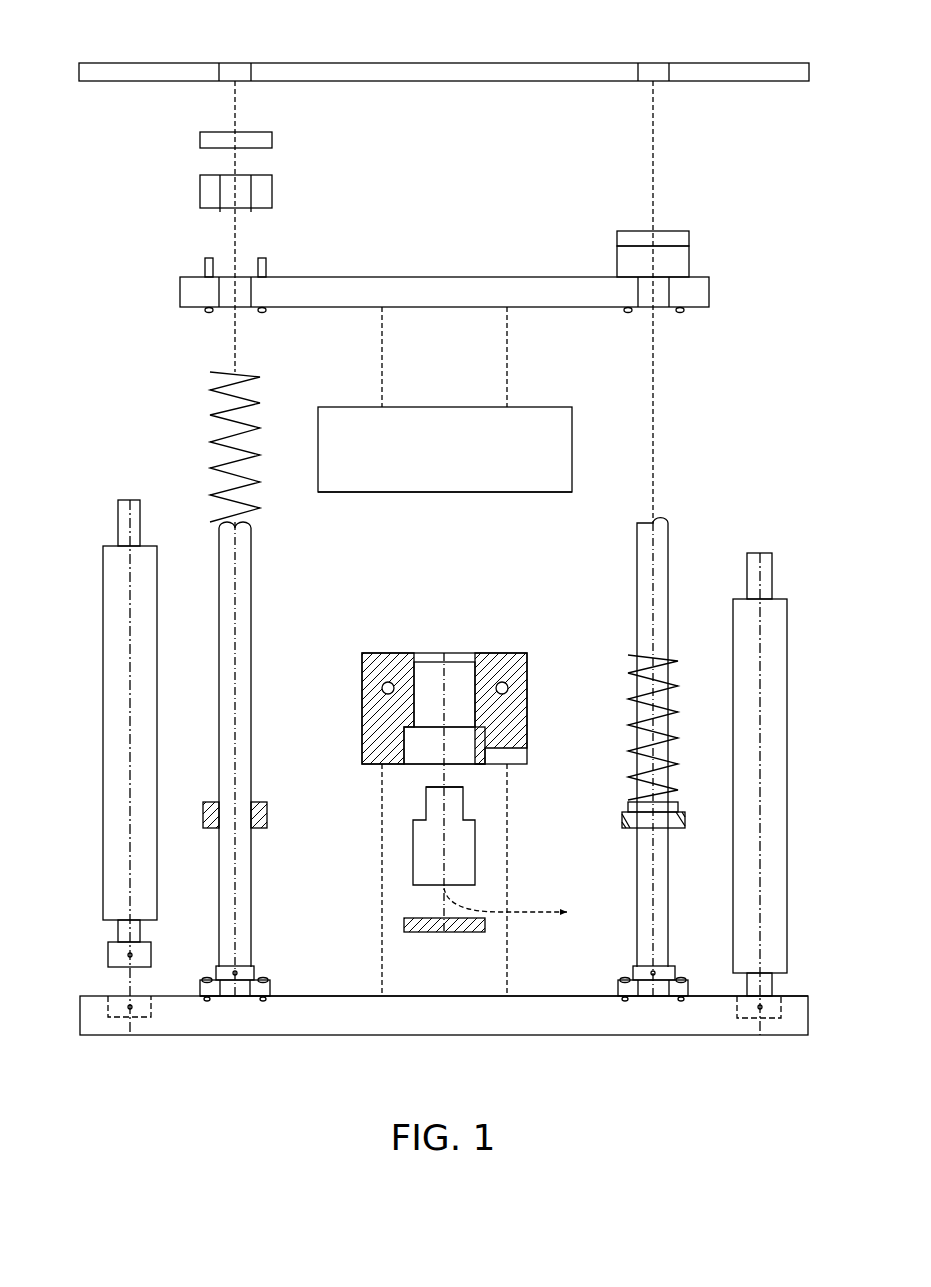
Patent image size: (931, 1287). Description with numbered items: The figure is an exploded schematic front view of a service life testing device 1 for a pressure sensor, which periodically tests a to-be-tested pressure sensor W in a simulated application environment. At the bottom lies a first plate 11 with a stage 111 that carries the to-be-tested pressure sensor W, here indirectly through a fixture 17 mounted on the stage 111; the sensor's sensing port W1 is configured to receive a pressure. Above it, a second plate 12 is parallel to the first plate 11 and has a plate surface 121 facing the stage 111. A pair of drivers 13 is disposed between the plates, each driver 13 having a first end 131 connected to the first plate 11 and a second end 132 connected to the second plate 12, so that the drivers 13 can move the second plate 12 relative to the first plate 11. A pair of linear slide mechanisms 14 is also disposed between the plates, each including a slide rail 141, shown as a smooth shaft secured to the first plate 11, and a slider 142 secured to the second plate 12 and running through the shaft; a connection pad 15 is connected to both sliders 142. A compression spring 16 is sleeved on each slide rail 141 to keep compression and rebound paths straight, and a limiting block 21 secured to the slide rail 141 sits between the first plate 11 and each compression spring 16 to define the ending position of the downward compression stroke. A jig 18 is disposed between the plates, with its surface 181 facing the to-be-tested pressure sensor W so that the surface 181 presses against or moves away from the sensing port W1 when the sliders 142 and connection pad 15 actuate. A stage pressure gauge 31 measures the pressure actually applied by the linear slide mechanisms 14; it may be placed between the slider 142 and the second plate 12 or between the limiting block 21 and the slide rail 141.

The service life testing device 1 is at (433, 566).
The first plate 11 is at (355, 1035).
The stage 111 is at (358, 996).
The second plate 12 is at (404, 63).
The plate surface 121 is at (367, 81).
The driver 13 is at (103, 750).
The first end 131 is at (108, 950).
The second end 132 is at (118, 515).
The linear slide mechanism 14 is at (444, 759).
The slide rail 141 is at (245, 722).
The slider 142 is at (272, 189).
The connection pad 15 is at (427, 277).
The compression spring 16 is at (222, 440).
The fixture 17 is at (386, 653).
The jig 18 is at (360, 407).
The surface 181 is at (400, 492).
The limiting block 21 is at (267, 815).
The stage pressure gauge 31 is at (265, 141).
The to-be-tested pressure sensor W is at (475, 835).
The sensing port W1 is at (430, 787).